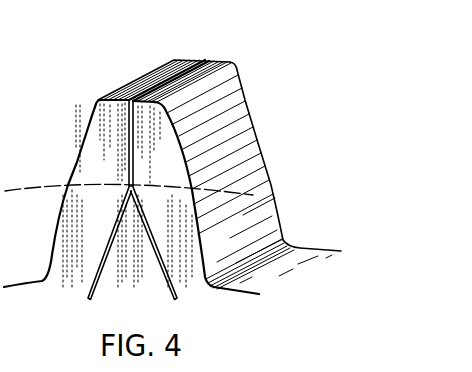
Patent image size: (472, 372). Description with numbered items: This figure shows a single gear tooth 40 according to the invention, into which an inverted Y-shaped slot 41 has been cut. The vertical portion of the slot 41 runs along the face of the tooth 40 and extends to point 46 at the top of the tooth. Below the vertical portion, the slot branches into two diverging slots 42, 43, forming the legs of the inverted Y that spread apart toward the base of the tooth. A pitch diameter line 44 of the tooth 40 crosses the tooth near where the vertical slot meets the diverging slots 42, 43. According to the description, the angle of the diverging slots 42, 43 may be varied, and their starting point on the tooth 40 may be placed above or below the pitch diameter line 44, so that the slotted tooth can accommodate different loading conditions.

The tooth 40 is at (257, 117).
The inverted Y-shaped slot 41 is at (127, 137).
The diverging slot 42 is at (177, 299).
The diverging slot 43 is at (88, 299).
The pitch diameter line 44 is at (152, 182).
The point 46 is at (184, 61).